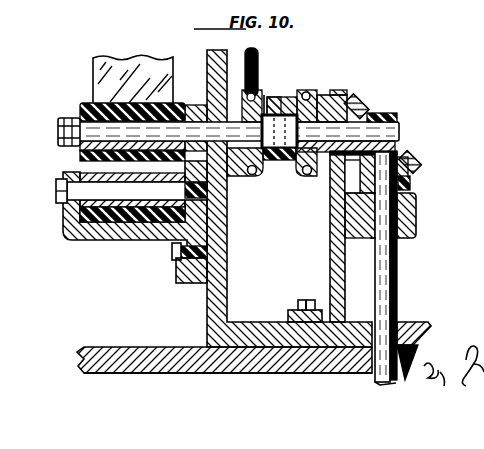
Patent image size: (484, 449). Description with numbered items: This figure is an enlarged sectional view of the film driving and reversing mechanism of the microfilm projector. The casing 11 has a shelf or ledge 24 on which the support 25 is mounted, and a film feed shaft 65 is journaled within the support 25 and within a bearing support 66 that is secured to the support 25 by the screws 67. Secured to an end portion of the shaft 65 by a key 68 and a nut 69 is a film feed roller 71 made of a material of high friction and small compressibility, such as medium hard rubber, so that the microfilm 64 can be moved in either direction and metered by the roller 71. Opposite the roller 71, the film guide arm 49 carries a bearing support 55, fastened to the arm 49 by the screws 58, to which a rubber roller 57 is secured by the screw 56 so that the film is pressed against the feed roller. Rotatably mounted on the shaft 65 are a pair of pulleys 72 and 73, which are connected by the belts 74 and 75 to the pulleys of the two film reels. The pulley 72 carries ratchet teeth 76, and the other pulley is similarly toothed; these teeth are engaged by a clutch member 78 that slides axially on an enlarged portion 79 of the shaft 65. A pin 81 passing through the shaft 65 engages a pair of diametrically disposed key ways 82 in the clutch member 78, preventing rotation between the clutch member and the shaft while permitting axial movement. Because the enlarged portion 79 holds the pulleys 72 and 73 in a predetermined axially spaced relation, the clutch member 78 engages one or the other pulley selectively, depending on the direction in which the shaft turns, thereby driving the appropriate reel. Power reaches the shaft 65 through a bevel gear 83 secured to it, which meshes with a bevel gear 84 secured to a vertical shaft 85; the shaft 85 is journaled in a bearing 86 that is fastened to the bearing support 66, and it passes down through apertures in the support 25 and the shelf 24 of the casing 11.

The casing 11 is at (112, 378).
The shelf or ledge 24 is at (115, 347).
The support 25 is at (228, 262).
The film guide arm 49 is at (199, 283).
The bearing support 55 is at (66, 232).
The screw 56 is at (60, 192).
The roller 57 is at (93, 223).
The screws 58 is at (173, 262).
The microfilm 64 is at (139, 65).
The film feed shaft 65 is at (401, 129).
The bearing support 66 is at (330, 259).
The screws 67 is at (305, 300).
The key 68 is at (135, 122).
The nut 69 is at (68, 121).
The film feed roller 71 is at (86, 104).
The pulley 72 is at (264, 100).
The pulley 73 is at (322, 96).
The belt 74 is at (257, 72).
The belt 75 is at (307, 91).
The ratchet teeth 76 is at (259, 126).
The clutch member 78 is at (280, 162).
The enlarged portion 79 is at (296, 160).
The pin 81 is at (271, 108).
The key ways 82 is at (265, 157).
The bevel gear 83 is at (360, 99).
The bevel gear 84 is at (412, 162).
The shaft 85 is at (397, 280).
The bearing 86 is at (417, 213).